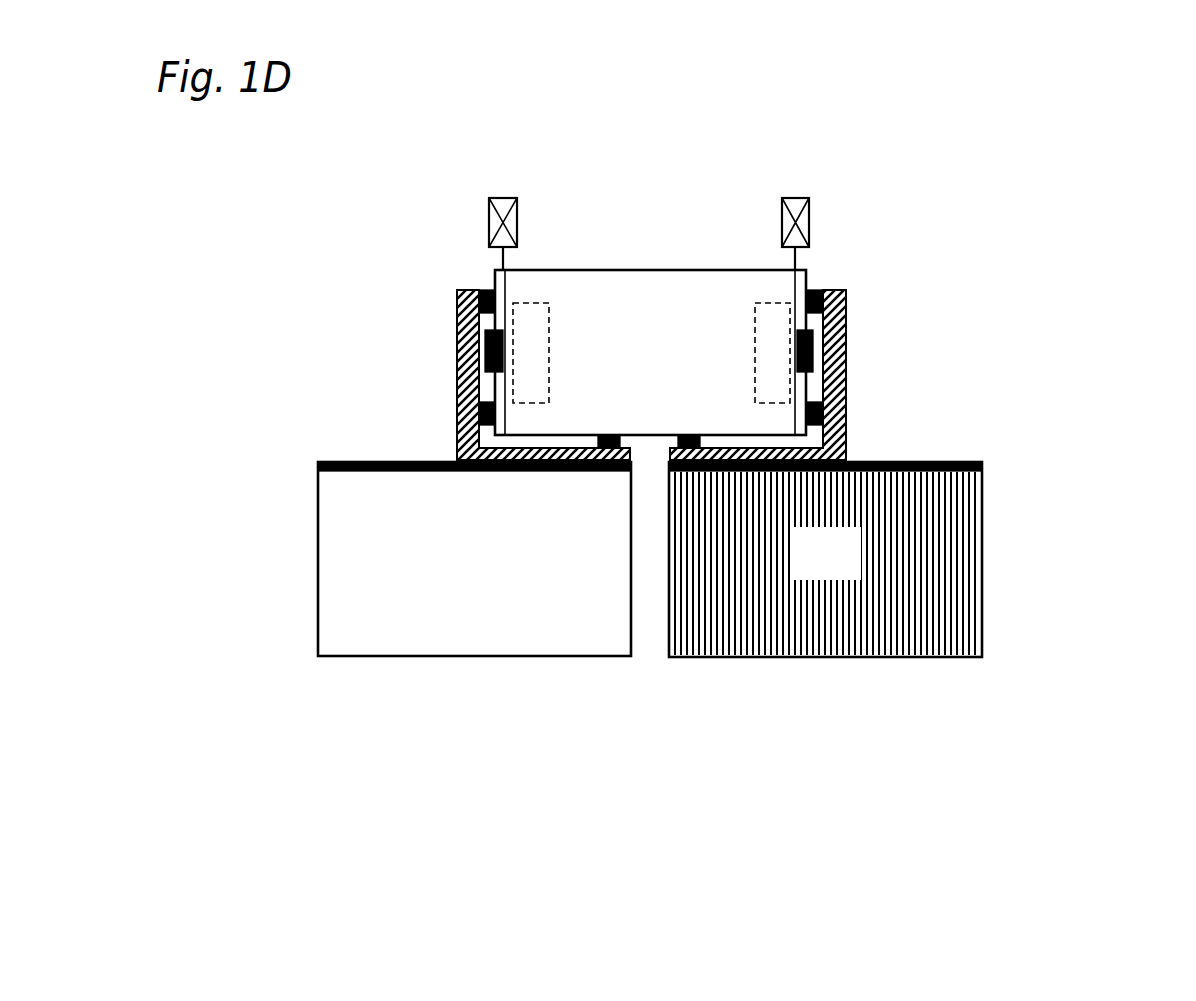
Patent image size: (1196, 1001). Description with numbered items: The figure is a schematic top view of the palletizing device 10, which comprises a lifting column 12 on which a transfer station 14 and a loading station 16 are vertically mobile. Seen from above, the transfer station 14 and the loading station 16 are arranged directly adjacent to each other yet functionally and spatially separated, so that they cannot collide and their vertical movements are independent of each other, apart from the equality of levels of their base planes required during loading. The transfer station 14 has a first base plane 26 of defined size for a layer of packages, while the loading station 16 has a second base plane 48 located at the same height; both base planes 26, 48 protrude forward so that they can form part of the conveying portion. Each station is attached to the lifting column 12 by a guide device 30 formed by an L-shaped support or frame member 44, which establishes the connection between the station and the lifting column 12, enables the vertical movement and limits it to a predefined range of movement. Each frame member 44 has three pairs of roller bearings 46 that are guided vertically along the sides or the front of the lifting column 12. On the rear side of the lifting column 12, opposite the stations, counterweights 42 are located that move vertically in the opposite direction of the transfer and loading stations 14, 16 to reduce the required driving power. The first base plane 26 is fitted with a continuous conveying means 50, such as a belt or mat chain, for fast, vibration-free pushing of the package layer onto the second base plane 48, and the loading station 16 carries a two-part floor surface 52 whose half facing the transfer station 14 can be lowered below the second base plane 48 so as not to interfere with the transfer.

The palletizing device 10 is at (966, 190).
The lifting column 12 is at (649, 286).
The transfer station 14 is at (461, 678).
The loading station 16 is at (871, 678).
The first base plane 26 is at (462, 570).
The guide device 30 is at (438, 363).
The counterweight 42 is at (502, 197).
The L-shaped support or frame member 44 is at (458, 293).
The roller bearing 46 is at (818, 292).
The second base plane 48 is at (809, 570).
The continuous conveying means 50 is at (342, 535).
The two-part floor surface 52 is at (970, 600).